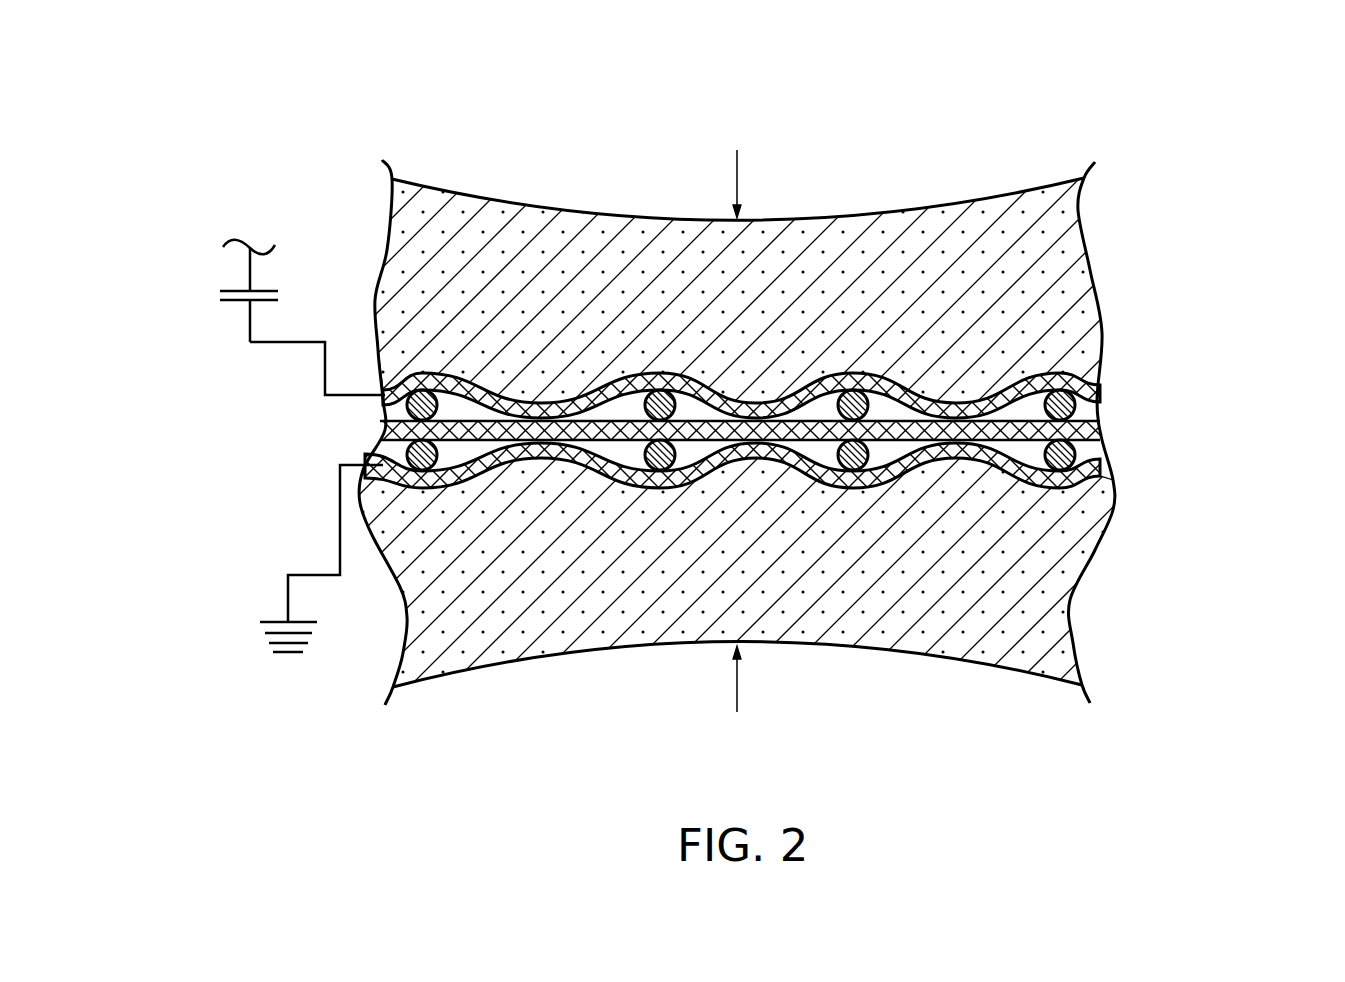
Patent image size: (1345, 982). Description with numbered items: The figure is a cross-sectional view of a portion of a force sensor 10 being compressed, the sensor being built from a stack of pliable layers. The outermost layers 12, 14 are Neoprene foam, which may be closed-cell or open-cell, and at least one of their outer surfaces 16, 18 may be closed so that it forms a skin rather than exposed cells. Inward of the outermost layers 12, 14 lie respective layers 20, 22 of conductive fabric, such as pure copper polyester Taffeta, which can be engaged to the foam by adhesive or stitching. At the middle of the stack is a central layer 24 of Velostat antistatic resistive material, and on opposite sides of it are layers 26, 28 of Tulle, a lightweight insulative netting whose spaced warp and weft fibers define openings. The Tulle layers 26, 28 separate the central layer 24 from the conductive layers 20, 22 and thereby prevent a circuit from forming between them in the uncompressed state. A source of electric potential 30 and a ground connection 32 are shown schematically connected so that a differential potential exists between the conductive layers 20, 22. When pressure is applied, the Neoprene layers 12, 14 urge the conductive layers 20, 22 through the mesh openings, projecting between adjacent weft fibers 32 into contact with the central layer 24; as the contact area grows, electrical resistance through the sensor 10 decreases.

The force sensor 10 is at (1238, 162).
The outermost layer 12 is at (1083, 275).
The outermost layer 14 is at (1067, 605).
The outer surface 16 is at (1015, 192).
The outer surface 18 is at (1008, 670).
The conductive fabric layer 20 is at (1085, 386).
The conductive fabric layer 22 is at (1100, 472).
The central layer 24 is at (1088, 437).
The Tulle layer 26 is at (387, 418).
The Tulle layer 28 is at (383, 462).
The source of electric potential 30 is at (200, 318).
The weft fibers 32 is at (685, 419).